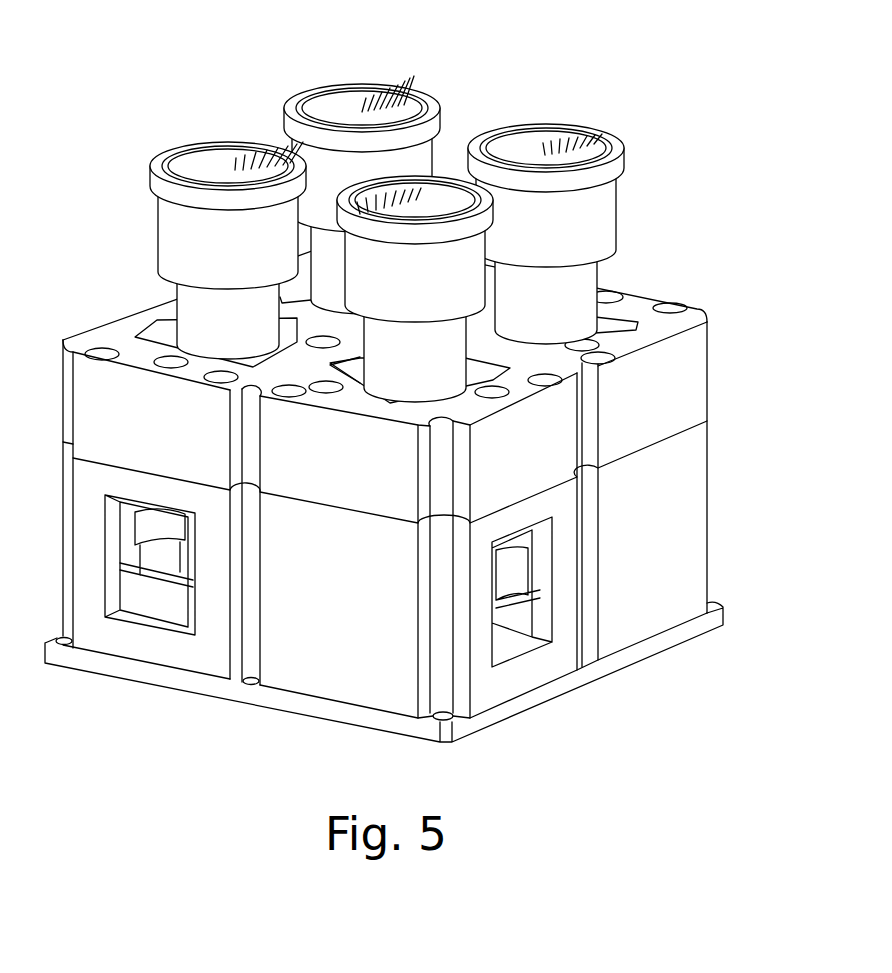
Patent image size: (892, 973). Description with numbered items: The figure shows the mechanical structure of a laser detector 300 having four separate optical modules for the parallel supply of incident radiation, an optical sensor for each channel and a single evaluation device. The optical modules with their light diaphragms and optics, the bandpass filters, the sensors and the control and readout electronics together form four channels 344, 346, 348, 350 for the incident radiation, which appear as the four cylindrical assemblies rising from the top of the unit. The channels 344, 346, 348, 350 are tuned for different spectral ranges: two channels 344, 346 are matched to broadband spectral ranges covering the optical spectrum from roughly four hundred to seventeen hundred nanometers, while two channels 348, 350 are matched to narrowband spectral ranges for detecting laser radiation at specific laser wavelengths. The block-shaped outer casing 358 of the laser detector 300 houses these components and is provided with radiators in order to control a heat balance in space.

The laser detector 300 is at (426, 376).
The channel 344 is at (207, 174).
The channel 346 is at (341, 109).
The channel 348 is at (440, 190).
The channel 350 is at (580, 140).
The outer casing 358 is at (673, 377).